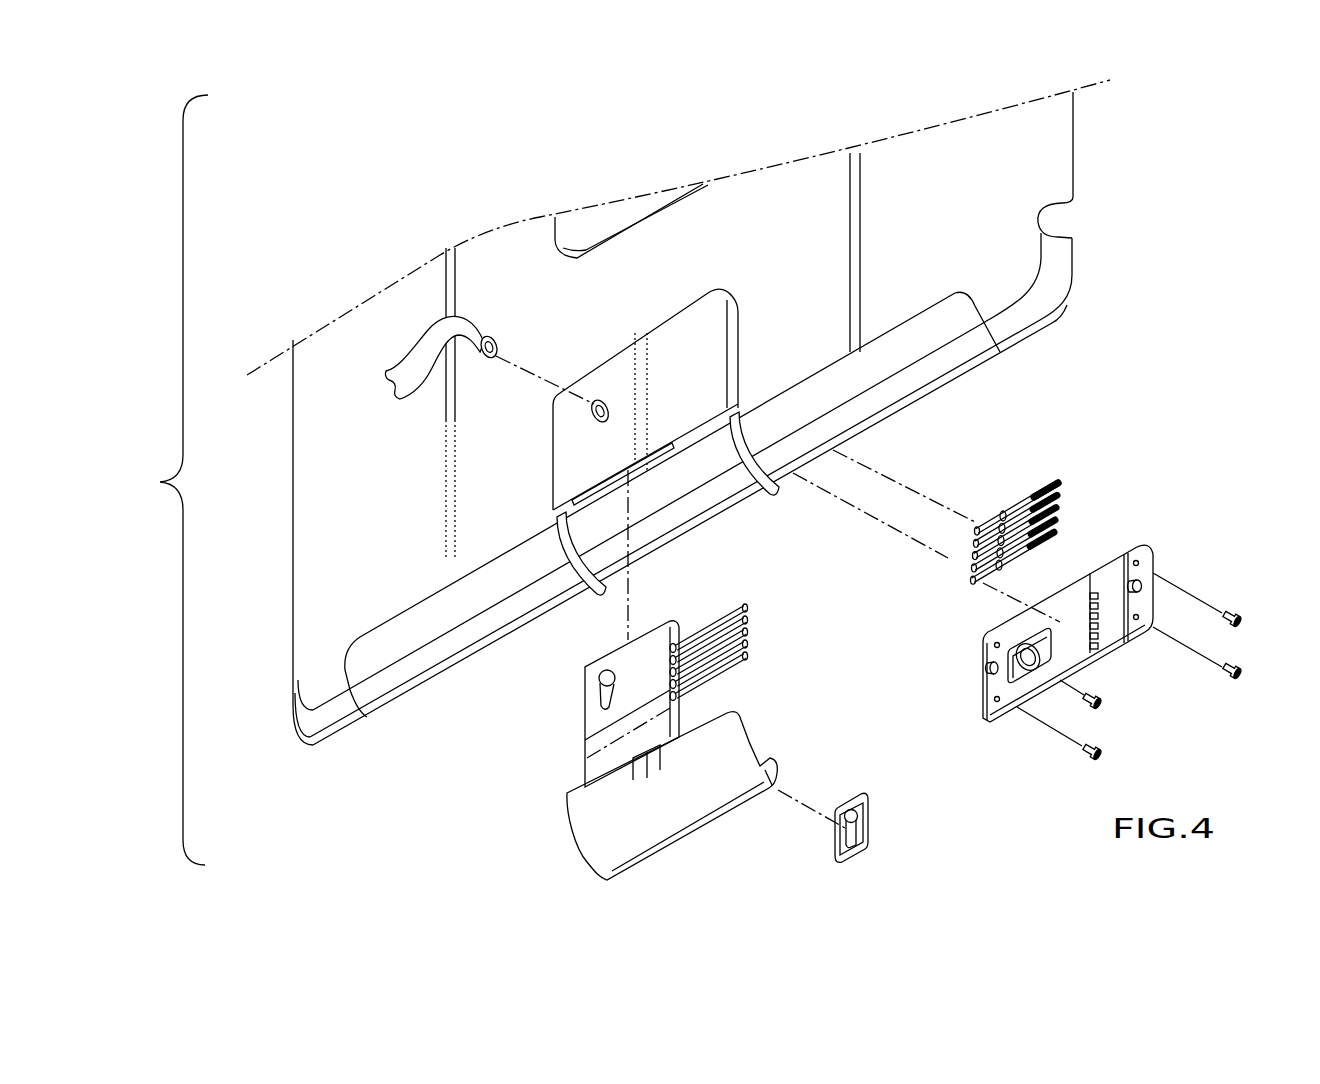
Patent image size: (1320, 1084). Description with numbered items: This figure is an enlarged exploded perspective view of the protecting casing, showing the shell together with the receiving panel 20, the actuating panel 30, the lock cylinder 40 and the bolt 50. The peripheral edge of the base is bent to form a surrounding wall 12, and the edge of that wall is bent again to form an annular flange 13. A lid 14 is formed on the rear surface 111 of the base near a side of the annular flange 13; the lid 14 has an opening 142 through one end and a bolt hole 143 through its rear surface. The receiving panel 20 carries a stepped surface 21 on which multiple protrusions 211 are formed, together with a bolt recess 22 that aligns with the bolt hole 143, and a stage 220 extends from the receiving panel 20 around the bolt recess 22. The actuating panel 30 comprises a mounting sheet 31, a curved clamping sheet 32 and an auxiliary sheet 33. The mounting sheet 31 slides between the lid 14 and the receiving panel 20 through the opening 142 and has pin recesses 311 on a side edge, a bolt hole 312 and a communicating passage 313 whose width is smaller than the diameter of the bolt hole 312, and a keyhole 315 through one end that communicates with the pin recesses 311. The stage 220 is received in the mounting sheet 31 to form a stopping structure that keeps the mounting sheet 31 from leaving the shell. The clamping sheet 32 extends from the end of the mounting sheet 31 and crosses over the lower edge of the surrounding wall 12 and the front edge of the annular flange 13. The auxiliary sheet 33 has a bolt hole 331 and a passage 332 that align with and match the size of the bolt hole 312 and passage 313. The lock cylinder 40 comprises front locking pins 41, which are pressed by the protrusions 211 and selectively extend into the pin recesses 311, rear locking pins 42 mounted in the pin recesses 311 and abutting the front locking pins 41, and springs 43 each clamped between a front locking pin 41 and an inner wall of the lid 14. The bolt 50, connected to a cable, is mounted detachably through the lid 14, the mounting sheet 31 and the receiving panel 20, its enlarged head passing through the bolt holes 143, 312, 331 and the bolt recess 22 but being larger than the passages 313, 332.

The rear surface 111 is at (308, 462).
The surrounding wall 12 is at (1053, 248).
The annular flange 13 is at (1060, 297).
The lid 14 is at (717, 333).
The opening 142 is at (652, 458).
The bolt hole 143 is at (592, 418).
The bolt 50 is at (472, 330).
The lock cylinder 40 is at (1037, 502).
The front locking pins 41 is at (995, 518).
The springs 43 is at (1052, 485).
The rear locking pins 42 is at (747, 606).
The receiving panel 20 is at (1080, 637).
The stepped surface 21 is at (1113, 570).
The protrusions 211 is at (1100, 647).
The bolt recess 22 is at (990, 687).
The stage 220 is at (1013, 662).
The actuating panel 30 is at (698, 732).
The mounting sheet 31 is at (631, 728).
The pin recesses 311 is at (675, 648).
The bolt hole 312 is at (603, 668).
The passage 313 is at (598, 697).
The keyhole 315 is at (650, 767).
The clamping sheet 32 is at (737, 797).
The auxiliary sheet 33 is at (850, 828).
The bolt hole 331 is at (858, 808).
The passage 332 is at (853, 848).